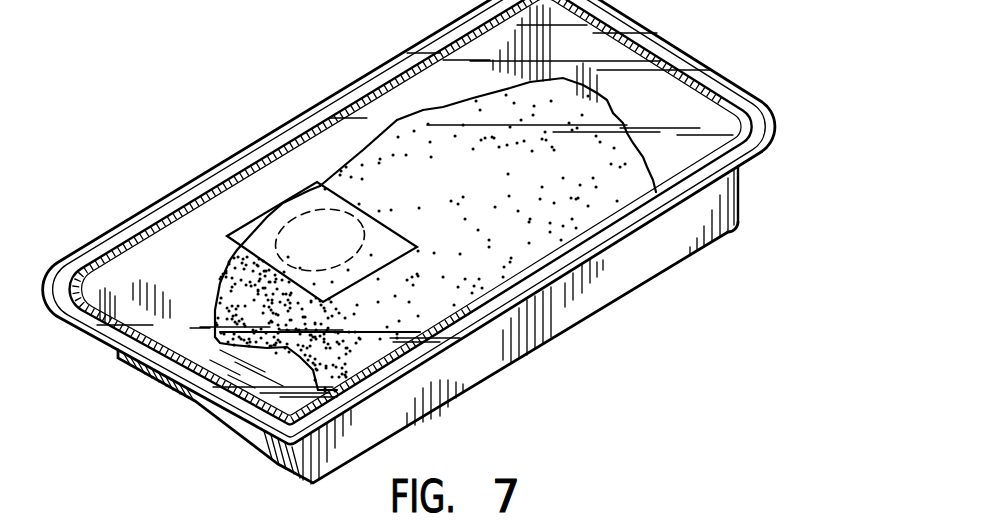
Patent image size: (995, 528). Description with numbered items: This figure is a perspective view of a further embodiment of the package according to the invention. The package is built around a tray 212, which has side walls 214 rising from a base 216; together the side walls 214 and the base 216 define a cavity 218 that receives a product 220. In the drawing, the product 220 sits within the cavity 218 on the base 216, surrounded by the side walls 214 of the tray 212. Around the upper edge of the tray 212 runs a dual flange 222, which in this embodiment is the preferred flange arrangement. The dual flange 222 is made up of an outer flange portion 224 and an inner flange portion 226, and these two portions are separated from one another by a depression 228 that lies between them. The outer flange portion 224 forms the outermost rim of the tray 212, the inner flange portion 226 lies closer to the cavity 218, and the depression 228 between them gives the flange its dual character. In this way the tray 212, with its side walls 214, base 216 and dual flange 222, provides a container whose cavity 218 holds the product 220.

The tray 212 is at (716, 252).
The side walls 214 is at (493, 378).
The base 216 is at (547, 343).
The cavity 218 is at (668, 114).
The product 220 is at (478, 192).
The dual flange 222 is at (752, 82).
The outer flange portion 224 is at (774, 113).
The inner flange portion 226 is at (751, 150).
The depression 228 is at (743, 166).